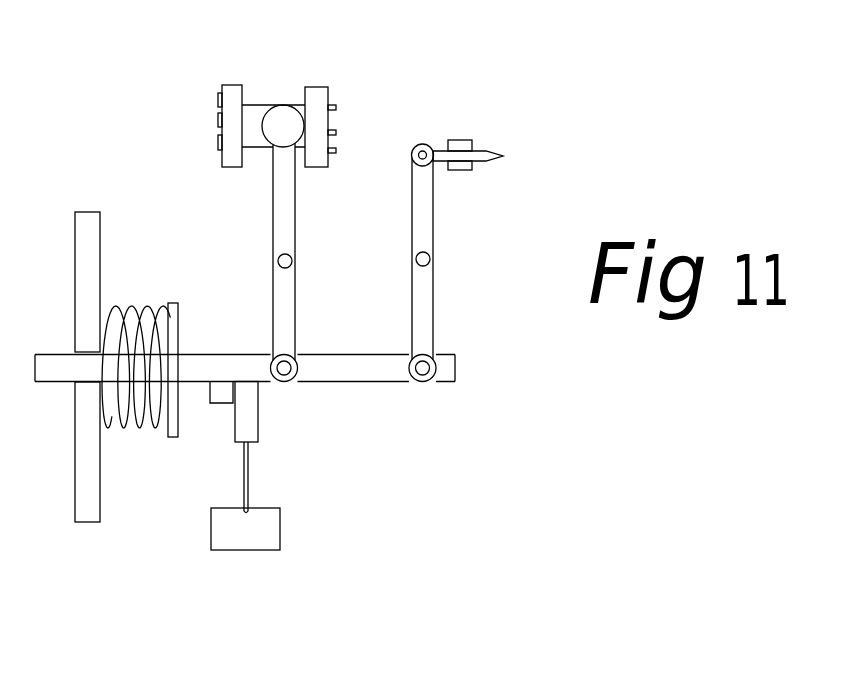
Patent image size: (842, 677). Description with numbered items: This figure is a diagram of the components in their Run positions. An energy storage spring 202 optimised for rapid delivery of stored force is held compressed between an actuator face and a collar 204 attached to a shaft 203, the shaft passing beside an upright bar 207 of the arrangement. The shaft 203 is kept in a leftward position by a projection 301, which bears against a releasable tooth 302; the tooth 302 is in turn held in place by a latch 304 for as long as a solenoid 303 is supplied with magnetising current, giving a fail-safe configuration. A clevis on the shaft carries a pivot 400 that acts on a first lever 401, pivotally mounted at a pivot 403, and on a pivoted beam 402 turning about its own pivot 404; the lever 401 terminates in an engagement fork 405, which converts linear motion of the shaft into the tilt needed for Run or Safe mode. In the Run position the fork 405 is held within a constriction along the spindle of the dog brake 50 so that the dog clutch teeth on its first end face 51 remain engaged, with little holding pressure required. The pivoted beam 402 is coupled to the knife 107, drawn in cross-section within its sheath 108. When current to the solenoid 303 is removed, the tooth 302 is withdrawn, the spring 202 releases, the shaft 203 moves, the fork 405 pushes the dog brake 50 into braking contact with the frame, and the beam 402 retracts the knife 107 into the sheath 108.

The dog brake 50 is at (228, 85).
The engagement fork 405 is at (283, 108).
The first end face 51 is at (338, 108).
The knife 107 is at (490, 150).
The knife sheath 108 is at (477, 169).
The vertical bar 207 is at (100, 212).
The first lever 401 is at (273, 237).
The pivoted beam 402 is at (413, 233).
The spring 202 is at (108, 305).
The pivot 403 is at (292, 262).
The right pivot 404 is at (432, 258).
The pivot 400 is at (294, 357).
The projection 301 is at (222, 354).
The shaft 203 is at (310, 383).
The tooth 302 is at (259, 422).
The solenoid 303 is at (329, 520).
The latch 304 is at (282, 513).
The collar 204 is at (179, 438).